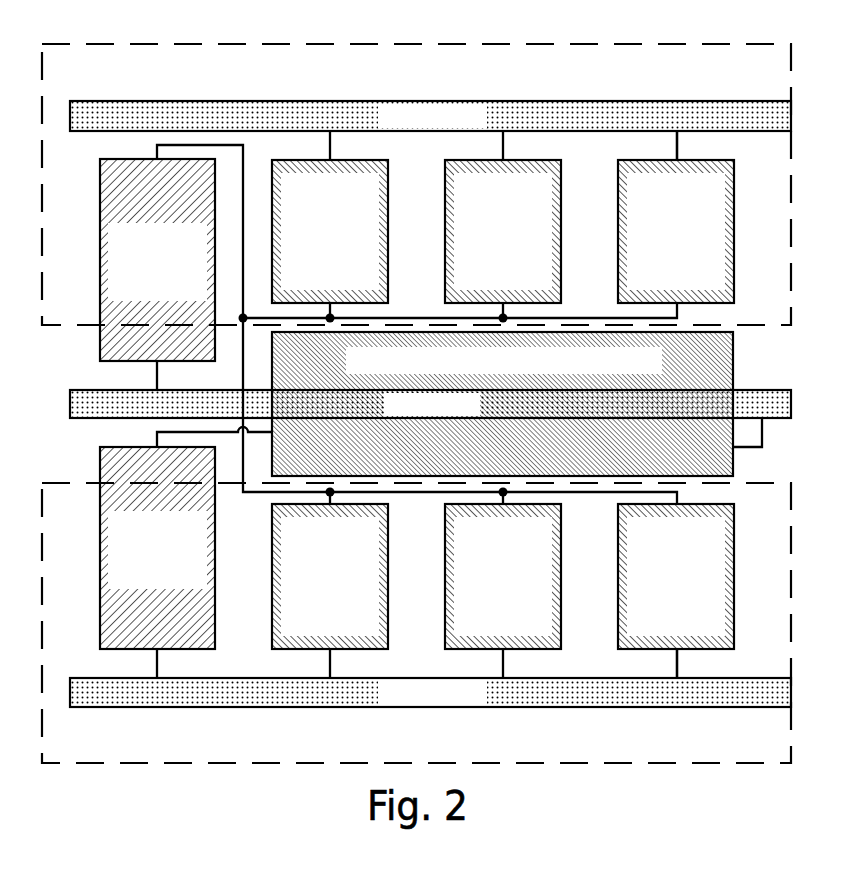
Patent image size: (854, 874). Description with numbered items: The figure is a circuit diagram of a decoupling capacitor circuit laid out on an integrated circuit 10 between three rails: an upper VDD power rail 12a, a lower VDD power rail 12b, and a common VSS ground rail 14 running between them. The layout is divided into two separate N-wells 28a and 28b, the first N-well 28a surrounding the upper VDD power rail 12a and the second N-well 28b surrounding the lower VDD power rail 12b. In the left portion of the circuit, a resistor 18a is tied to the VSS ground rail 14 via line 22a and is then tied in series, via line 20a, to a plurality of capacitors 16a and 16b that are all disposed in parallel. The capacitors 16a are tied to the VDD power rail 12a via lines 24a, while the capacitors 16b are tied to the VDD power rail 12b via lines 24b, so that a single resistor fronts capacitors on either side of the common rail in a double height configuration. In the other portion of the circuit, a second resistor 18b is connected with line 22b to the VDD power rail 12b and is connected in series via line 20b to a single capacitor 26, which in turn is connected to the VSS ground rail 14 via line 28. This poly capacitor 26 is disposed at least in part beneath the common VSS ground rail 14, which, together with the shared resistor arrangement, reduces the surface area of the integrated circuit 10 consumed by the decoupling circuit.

The integrated circuit 10 is at (789, 745).
The VDD power rail 12a is at (430, 116).
The VDD power rail 12b is at (430, 692).
The VSS ground rail 14 is at (430, 404).
The capacitors 16a is at (503, 231).
The capacitors 16b is at (503, 576).
The resistor 18a is at (157, 260).
The resistor 18b is at (157, 548).
The line 20a is at (156, 157).
The line 20b is at (156, 443).
The line 22a is at (156, 377).
The line 22b is at (156, 665).
The lines 24a is at (678, 152).
The lines 24b is at (678, 666).
The capacitor 26 is at (502, 404).
The line 28 is at (765, 433).
The N-well 28a is at (416, 184).
The N-well 28b is at (416, 623).